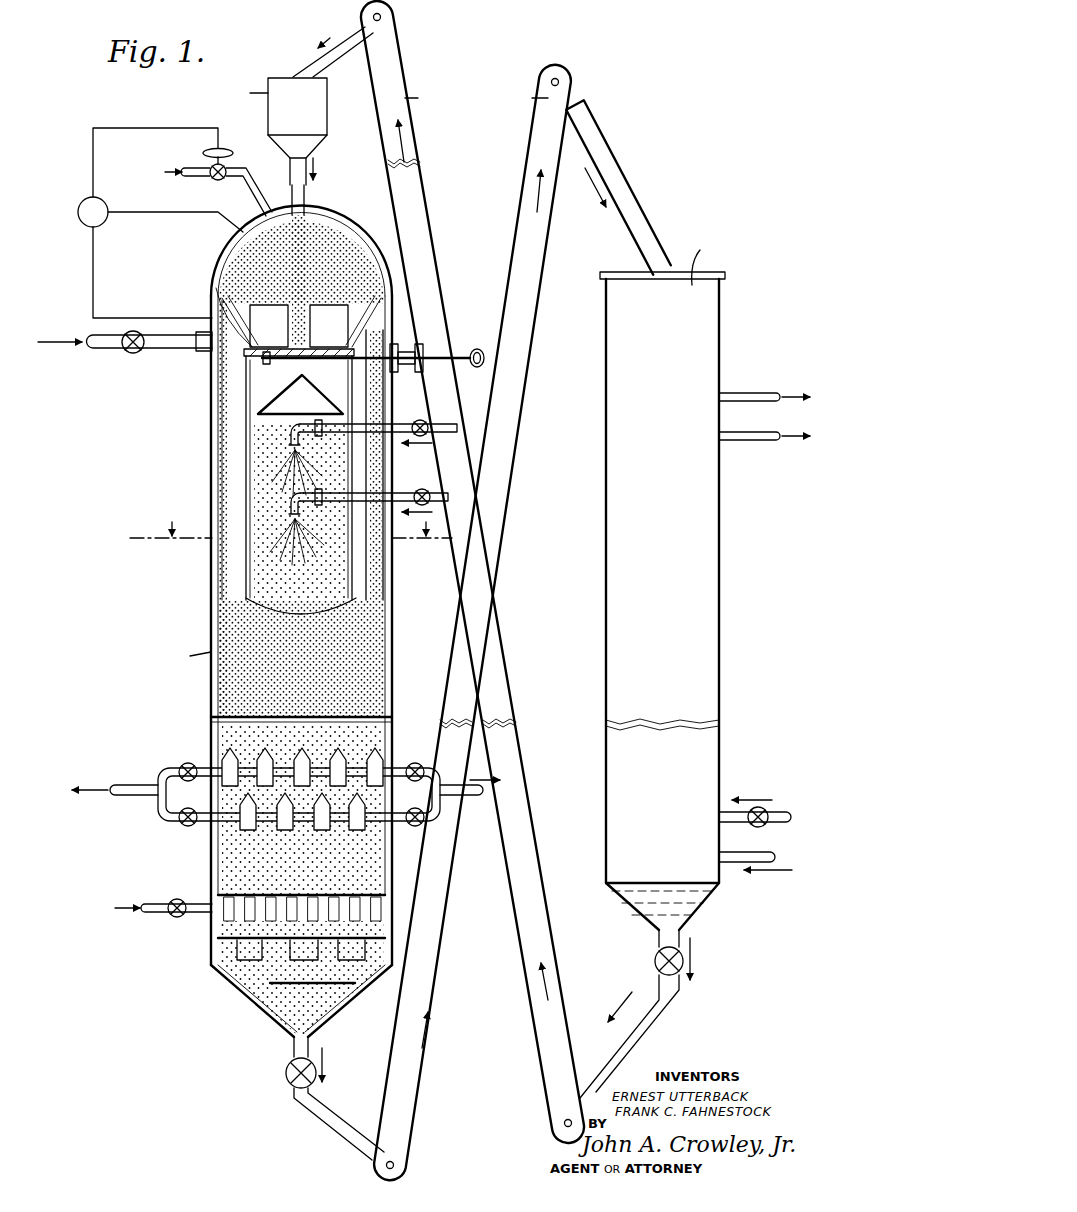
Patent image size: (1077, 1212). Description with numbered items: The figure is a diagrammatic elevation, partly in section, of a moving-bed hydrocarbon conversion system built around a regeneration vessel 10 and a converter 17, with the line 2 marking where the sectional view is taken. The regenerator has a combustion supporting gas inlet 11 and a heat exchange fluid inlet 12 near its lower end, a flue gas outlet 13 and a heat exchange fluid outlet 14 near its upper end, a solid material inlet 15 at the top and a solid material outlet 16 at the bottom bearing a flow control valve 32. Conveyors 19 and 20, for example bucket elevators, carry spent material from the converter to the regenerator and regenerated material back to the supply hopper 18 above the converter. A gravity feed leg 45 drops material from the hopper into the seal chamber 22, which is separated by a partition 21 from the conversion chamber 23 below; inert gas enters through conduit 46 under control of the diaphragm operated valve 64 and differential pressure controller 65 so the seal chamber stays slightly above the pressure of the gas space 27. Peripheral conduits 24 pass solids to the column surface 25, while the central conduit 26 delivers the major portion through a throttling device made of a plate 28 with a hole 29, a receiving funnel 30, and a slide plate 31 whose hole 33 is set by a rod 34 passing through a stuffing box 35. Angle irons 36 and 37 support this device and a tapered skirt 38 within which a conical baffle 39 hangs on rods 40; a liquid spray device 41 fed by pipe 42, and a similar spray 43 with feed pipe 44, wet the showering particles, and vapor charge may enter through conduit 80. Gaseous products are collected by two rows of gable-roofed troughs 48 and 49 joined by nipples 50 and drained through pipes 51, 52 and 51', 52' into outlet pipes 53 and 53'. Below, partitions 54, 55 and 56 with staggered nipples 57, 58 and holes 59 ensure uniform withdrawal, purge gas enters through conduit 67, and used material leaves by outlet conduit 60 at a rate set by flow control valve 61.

The section line 2— 2 is at (291, 527).
The regeneration vessel 10 is at (606, 542).
The combustion supporting gas inlet 11 is at (774, 807).
The heat exchange fluid inlet 12 is at (746, 858).
The flue gas outlet 13 is at (750, 440).
The heat exchange fluid outlet 14 is at (752, 395).
The solid material inlet 15 is at (632, 192).
The solid material outlet 16 is at (659, 945).
The converter 17 is at (211, 612).
The supply hopper 18 is at (283, 109).
The conveyor 19 is at (522, 196).
The conveyor 20 is at (402, 192).
The partition 21 is at (215, 296).
The seal chamber 22 is at (340, 244).
The conversion chamber 23 is at (378, 612).
The spaced conduits 24 is at (246, 478).
The surface of the contact material column 25 is at (365, 596).
The central conduit 26 is at (269, 326).
The gas space 27 is at (374, 410).
The plate 28 is at (247, 321).
The hole 29 is at (329, 326).
The receiving funnel 30 is at (305, 345).
The slide plate 31 is at (330, 360).
The flow control valve 32 is at (655, 964).
The hole 33 is at (274, 360).
The rod 34 is at (465, 352).
The stuffing box 35 is at (402, 344).
The angle iron 36 is at (216, 374).
The angle iron 37 is at (355, 322).
The skirt 38 is at (246, 392).
The conical shaped baffle 39 is at (300, 394).
The rods 40 is at (250, 410).
The liquid spray device 41 is at (289, 436).
The pipe 42 is at (378, 426).
The spray 43 is at (289, 506).
The feed pipe 44 is at (401, 493).
The gravity feed leg 45 is at (302, 165).
The conduit 46 is at (250, 188).
The gas collecting troughs 48 is at (216, 735).
The gas collecting troughs 49 is at (215, 838).
The nipples 50 is at (212, 790).
The feed pipe 51 is at (416, 761).
The feed pipe 51' is at (181, 758).
The feed pipe 52 is at (319, 807).
The feed pipe 52' is at (183, 825).
The outlet pipe 53 is at (453, 810).
The outlet pipe 53' is at (115, 773).
The partition 54 is at (218, 895).
The partition 55 is at (218, 938).
The partition 56 is at (240, 975).
The nipples 57 is at (380, 890).
The nipples 58 is at (240, 952).
The holes 59 is at (335, 1000).
The outlet conduit 60 is at (292, 1050).
The flow control valve 61 is at (285, 1073).
The diaphragm operated valve 64 is at (226, 166).
The differential pressure controller 65 is at (82, 200).
The conduit 67 is at (158, 900).
The conduit 80 is at (160, 350).